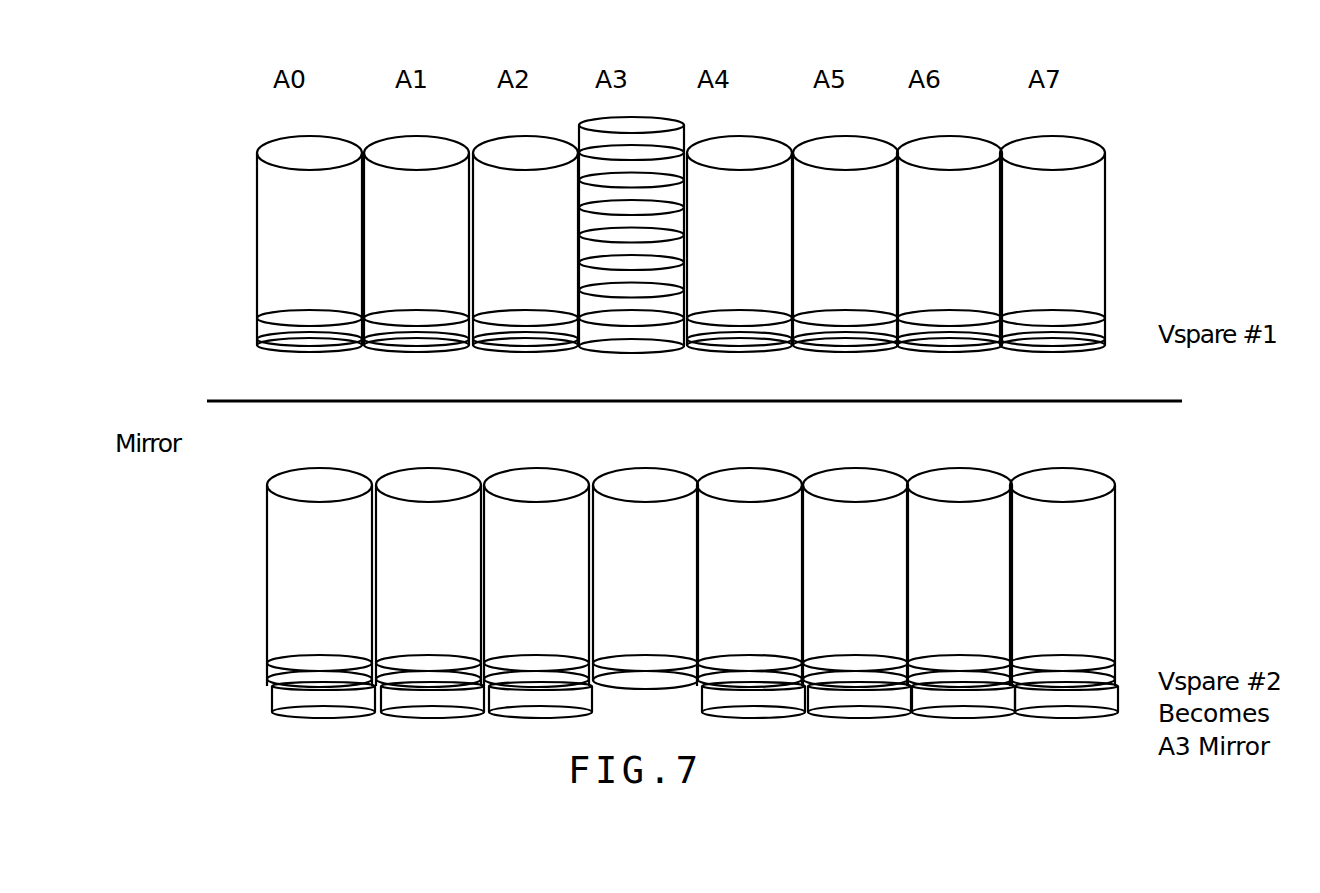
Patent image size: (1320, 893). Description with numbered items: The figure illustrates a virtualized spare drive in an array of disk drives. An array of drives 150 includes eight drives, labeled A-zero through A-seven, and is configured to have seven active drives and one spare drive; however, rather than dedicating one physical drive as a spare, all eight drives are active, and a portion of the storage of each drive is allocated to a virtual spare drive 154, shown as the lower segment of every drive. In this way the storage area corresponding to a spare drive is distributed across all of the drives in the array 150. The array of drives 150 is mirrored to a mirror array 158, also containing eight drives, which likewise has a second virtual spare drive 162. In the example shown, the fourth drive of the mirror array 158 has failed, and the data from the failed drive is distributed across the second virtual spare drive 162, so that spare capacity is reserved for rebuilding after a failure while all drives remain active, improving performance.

The array of drives 150 is at (257, 221).
The virtual spare drive 154 is at (257, 338).
The mirror array 158 is at (267, 555).
The second virtual spare drive 162 is at (272, 697).